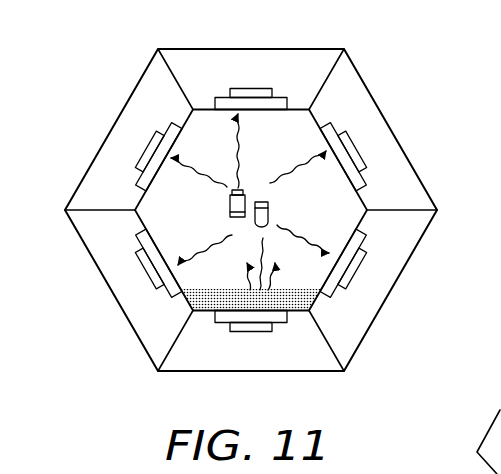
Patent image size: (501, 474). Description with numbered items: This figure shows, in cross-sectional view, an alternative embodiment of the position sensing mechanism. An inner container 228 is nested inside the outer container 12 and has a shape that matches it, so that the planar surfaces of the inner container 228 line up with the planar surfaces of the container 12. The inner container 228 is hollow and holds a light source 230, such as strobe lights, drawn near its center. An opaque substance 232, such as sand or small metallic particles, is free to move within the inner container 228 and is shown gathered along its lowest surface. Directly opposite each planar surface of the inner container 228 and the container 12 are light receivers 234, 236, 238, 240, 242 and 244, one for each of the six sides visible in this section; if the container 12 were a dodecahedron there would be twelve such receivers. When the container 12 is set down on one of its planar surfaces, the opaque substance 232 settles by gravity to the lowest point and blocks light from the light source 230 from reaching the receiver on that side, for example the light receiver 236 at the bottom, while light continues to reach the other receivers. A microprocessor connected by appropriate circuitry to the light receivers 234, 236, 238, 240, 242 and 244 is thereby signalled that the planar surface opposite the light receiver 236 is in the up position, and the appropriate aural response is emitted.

The container 12 is at (364, 84).
The inner container 228 is at (362, 196).
The light source 230 is at (258, 200).
The opaque substance 232 is at (315, 303).
The light receiver 234 is at (362, 270).
The light receiver 236 is at (257, 332).
The light receiver 238 is at (147, 275).
The light receiver 240 is at (143, 150).
The light receiver 242 is at (250, 88).
The light receiver 244 is at (352, 143).